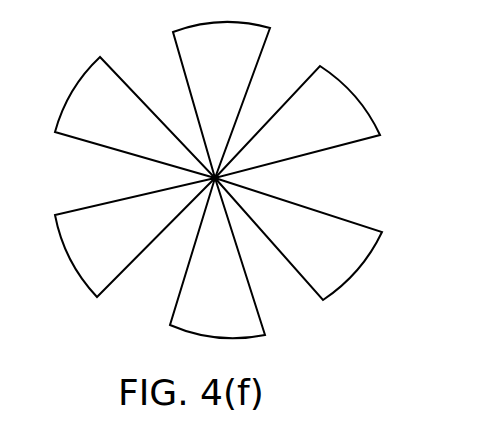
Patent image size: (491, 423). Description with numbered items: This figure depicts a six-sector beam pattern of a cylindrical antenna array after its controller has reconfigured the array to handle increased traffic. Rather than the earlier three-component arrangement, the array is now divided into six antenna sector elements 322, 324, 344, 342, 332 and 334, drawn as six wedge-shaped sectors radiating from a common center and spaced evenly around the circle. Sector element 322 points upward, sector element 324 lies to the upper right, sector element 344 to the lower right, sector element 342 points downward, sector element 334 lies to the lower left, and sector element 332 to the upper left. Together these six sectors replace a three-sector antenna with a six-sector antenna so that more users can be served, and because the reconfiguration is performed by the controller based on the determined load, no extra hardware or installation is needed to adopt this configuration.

The antenna sector element 322 is at (252, 16).
The antenna sector element 324 is at (342, 76).
The antenna sector element 332 is at (73, 78).
The antenna sector element 334 is at (73, 207).
The antenna sector element 342 is at (268, 306).
The antenna sector element 344 is at (340, 212).